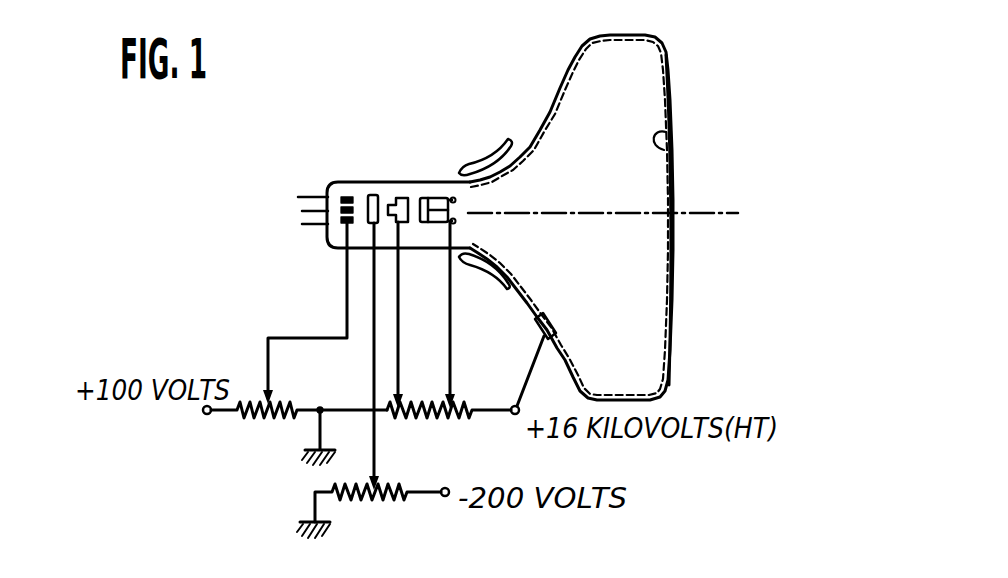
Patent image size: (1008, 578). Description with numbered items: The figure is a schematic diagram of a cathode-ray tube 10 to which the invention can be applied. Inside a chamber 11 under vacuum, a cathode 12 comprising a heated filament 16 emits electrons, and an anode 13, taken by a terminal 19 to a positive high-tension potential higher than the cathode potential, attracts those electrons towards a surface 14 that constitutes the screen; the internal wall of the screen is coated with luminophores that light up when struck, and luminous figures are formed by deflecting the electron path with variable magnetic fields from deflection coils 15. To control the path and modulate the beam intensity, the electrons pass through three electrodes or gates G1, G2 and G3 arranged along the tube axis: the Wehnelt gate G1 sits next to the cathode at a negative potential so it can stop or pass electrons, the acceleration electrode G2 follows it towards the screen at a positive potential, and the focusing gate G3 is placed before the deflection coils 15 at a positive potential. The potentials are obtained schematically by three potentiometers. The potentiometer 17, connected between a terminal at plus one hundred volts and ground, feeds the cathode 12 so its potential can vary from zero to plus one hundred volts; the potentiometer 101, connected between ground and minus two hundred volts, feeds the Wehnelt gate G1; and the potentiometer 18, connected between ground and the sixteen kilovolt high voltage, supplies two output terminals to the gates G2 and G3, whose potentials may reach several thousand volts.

The cathode-ray tube 10 is at (677, 103).
The chamber 11 is at (597, 192).
The cathode 12 is at (349, 193).
The anode 13 is at (690, 147).
The surface 14 is at (674, 203).
The deflection coils 15 is at (499, 143).
The heated filament 16 is at (330, 212).
The potentiometer 17 is at (262, 422).
The potentiometer 18 is at (450, 428).
The terminal 19 is at (537, 323).
The potentiometer 101 is at (383, 498).
The Wehnelt gate G1 is at (371, 193).
The acceleration electrode G2 is at (395, 197).
The focusing gate G3 is at (444, 196).